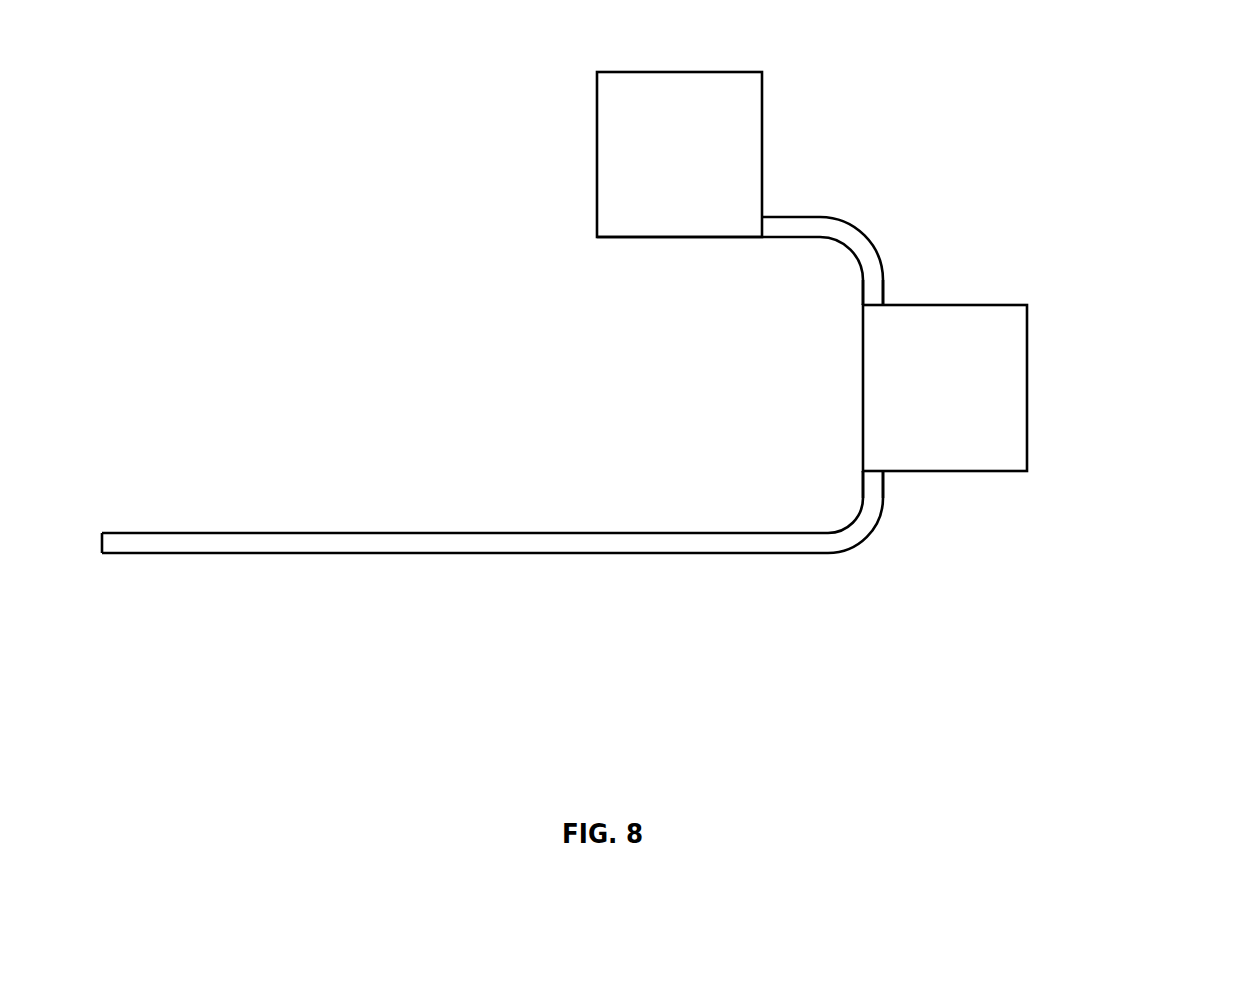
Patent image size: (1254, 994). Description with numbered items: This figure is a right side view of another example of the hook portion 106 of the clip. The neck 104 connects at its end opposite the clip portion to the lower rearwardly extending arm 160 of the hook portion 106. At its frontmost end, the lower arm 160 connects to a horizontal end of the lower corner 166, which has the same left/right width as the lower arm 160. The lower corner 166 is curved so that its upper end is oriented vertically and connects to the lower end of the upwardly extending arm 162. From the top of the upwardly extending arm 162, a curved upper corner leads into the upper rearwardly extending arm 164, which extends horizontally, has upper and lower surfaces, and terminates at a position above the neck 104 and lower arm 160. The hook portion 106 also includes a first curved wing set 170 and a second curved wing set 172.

The neck 104 is at (132, 543).
The hook portion 106 is at (952, 143).
The lower rearwardly extending arm 160 is at (741, 543).
The upwardly extending arm 162 is at (865, 392).
The upper rearwardly extending arm 164 is at (643, 223).
The lower corner 166 is at (852, 533).
The first curved wing set 170 is at (990, 388).
The second curved wing set 172 is at (700, 138).